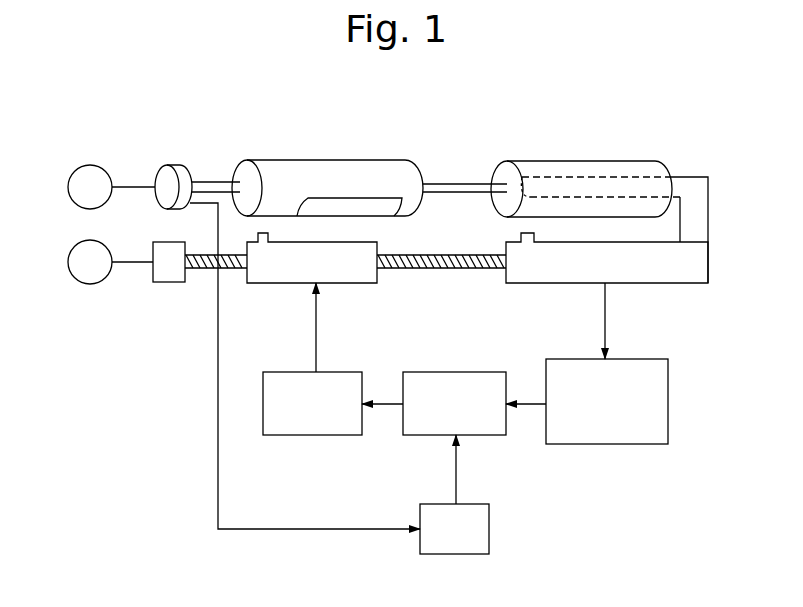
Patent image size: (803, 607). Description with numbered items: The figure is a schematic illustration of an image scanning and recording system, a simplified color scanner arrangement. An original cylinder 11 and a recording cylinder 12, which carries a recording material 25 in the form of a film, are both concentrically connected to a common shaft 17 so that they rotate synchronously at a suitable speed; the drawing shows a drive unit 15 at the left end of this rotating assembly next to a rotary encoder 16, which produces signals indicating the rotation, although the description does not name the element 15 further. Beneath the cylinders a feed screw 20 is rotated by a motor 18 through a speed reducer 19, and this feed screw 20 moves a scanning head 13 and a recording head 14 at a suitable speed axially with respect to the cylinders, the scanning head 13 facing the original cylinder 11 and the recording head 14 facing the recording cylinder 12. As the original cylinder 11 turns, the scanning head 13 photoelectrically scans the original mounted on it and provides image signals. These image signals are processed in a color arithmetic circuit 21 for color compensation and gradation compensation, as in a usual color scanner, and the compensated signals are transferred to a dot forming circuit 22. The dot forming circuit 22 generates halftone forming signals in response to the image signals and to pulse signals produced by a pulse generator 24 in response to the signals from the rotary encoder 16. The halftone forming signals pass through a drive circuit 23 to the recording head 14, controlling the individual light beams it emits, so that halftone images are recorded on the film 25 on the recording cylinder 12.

The original cylinder 11 is at (592, 161).
The recording cylinder 12 is at (368, 160).
The scanning head 13 is at (558, 285).
The recording head 14 is at (280, 284).
The motor 15 is at (96, 167).
The rotary encoder 16 is at (191, 167).
The common shaft 17 is at (440, 185).
The motor 18 is at (92, 284).
The speed reducer 19 is at (165, 283).
The feed screw 20 is at (442, 269).
The color arithmetic circuit 21 is at (613, 418).
The dot forming circuit 22 is at (462, 418).
The drive circuit 23 is at (320, 418).
The pulse generator 24 is at (463, 546).
The recording material 25 is at (309, 198).